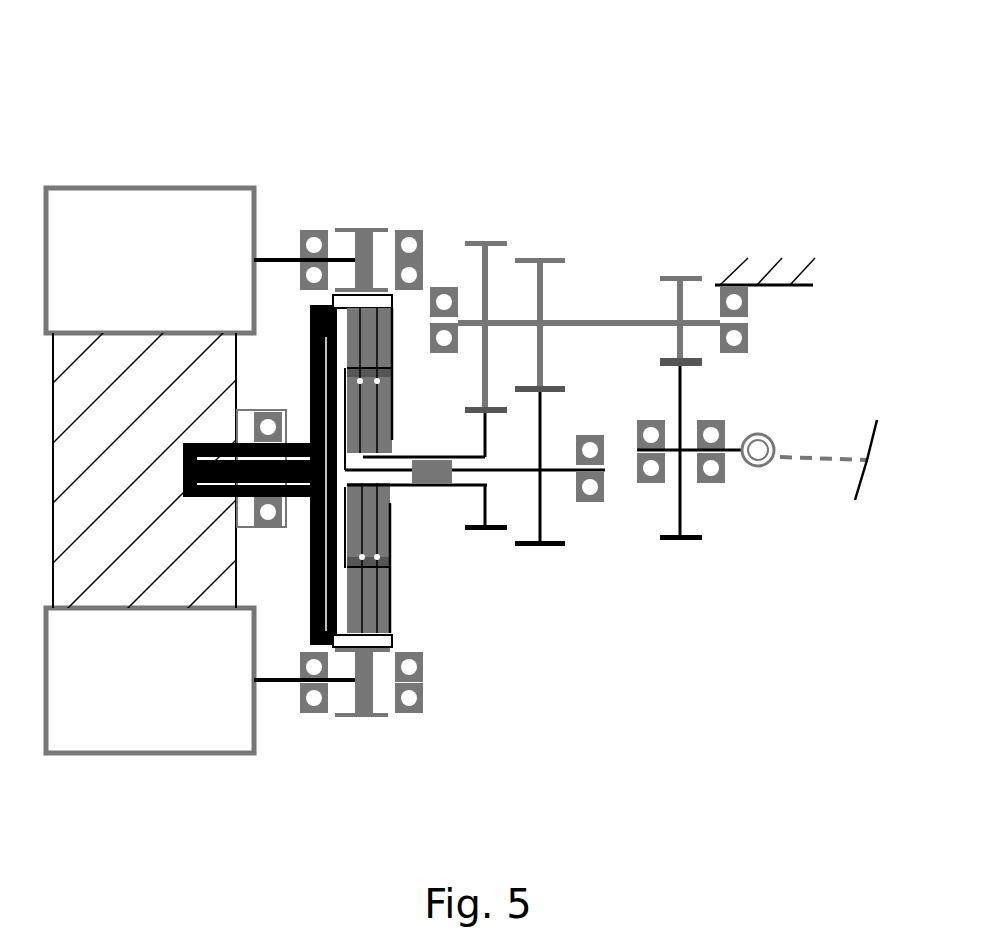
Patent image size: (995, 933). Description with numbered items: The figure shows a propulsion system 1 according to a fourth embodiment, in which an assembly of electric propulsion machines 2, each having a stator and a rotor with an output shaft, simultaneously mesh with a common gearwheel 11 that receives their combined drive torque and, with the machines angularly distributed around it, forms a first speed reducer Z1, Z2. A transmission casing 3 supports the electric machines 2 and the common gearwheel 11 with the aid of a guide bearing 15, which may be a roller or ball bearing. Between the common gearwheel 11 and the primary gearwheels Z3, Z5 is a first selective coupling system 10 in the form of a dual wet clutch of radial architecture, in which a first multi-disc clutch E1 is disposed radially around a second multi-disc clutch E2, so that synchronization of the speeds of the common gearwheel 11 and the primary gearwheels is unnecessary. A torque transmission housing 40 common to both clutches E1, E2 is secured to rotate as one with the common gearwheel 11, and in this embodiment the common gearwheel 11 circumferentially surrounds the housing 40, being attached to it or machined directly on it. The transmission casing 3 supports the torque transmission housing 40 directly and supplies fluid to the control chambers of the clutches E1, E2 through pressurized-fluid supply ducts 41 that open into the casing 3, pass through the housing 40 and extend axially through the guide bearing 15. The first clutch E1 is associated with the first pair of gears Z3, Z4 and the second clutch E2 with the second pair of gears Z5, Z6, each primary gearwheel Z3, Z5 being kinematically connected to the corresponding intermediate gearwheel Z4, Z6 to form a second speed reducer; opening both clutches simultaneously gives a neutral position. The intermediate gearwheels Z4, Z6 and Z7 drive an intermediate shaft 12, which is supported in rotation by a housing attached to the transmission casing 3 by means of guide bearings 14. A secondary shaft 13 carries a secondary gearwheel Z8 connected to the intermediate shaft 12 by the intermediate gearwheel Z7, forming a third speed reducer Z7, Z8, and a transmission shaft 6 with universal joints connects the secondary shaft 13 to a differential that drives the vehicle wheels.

The propulsion system 1 is at (142, 150).
The electric propulsion machine 2 is at (211, 230).
The transmission casing 3 is at (210, 337).
The transmission shaft 6 is at (837, 462).
The first selective coupling system 10 is at (378, 637).
The common gearwheel 11 is at (421, 251).
The intermediate shaft 12 is at (602, 318).
The secondary shaft 13 is at (731, 452).
The guide bearing 14 is at (733, 285).
The guide bearing 15 is at (268, 517).
The torque transmission housing 40 is at (317, 637).
The pressurized-fluid supply duct 41 is at (218, 492).
The first multi-disc clutch E1 is at (388, 337).
The second multi-disc clutch E2 is at (383, 530).
The first speed reducer gear Z1 is at (338, 233).
The first speed reducer gear Z2 is at (338, 682).
The primary gearwheel Z3 is at (559, 490).
The intermediate gearwheel Z4 is at (550, 297).
The primary gearwheel Z5 is at (496, 536).
The intermediate gearwheel Z6 is at (470, 329).
The intermediate gearwheel Z7 is at (681, 284).
The secondary gearwheel Z8 is at (681, 477).